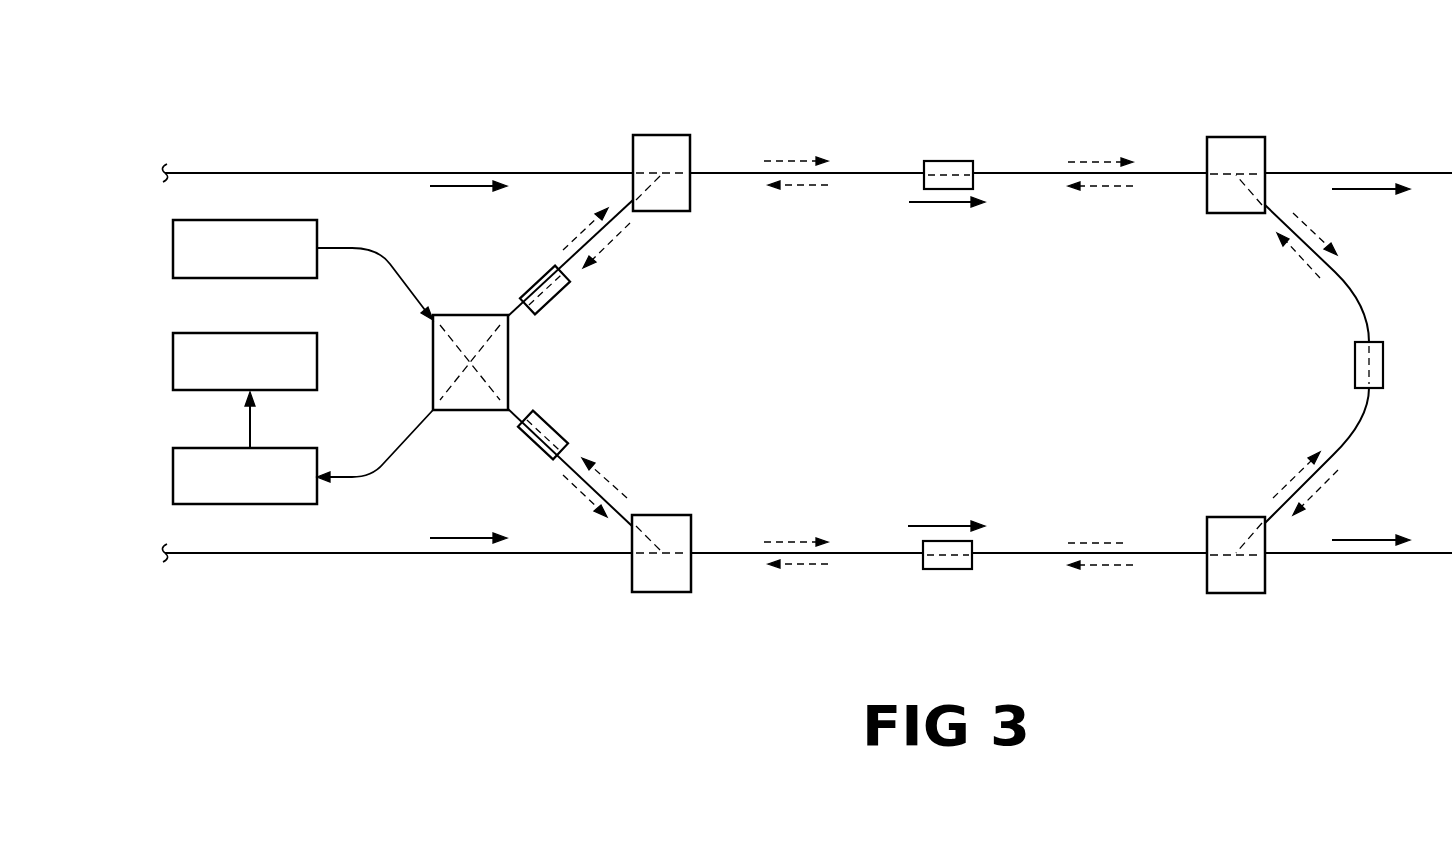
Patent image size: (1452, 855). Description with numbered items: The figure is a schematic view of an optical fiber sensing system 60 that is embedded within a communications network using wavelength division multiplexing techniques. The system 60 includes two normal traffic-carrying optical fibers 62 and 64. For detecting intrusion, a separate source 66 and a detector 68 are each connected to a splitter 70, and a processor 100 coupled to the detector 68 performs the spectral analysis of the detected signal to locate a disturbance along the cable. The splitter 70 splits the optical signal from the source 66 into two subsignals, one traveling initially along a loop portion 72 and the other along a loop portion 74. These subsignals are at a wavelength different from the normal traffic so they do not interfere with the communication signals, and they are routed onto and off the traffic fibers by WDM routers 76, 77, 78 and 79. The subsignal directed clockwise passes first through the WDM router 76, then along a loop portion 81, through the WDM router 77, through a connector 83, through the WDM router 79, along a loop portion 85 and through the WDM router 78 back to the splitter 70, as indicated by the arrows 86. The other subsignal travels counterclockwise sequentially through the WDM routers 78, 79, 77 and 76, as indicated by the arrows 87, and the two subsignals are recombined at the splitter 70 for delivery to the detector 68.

The system 60 is at (902, 72).
The optical fiber 62 is at (480, 173).
The optical fiber 64 is at (480, 553).
The source 66 is at (232, 220).
The detector 68 is at (232, 448).
The splitter 70 is at (472, 315).
The loop portion 72 is at (517, 325).
The loop portion 74 is at (517, 405).
The WDM router 76 is at (658, 135).
The WDM router 77 is at (1235, 137).
The WDM router 78 is at (660, 592).
The WDM router 79 is at (1235, 593).
The loop portion 81 is at (900, 173).
The connector 83 is at (1383, 362).
The loop portion 85 is at (905, 553).
The solid arrows 86 is at (795, 160).
The broken arrows 87 is at (800, 185).
The processor 100 is at (230, 333).